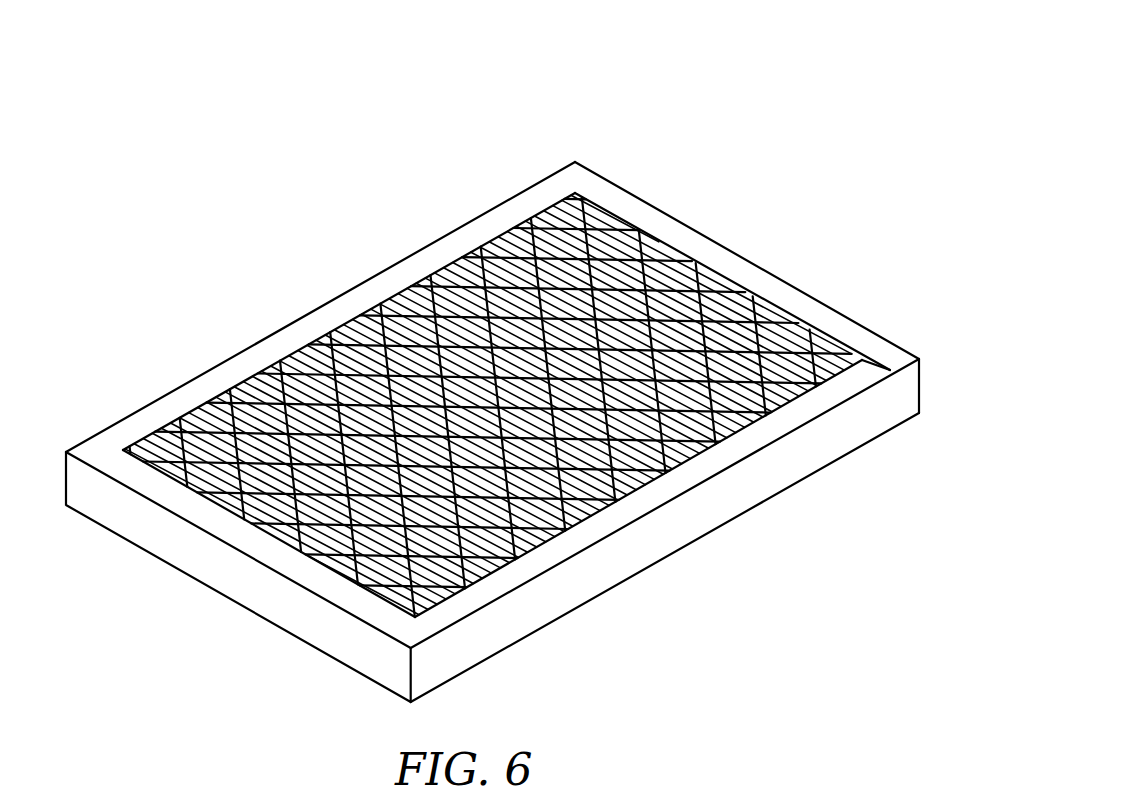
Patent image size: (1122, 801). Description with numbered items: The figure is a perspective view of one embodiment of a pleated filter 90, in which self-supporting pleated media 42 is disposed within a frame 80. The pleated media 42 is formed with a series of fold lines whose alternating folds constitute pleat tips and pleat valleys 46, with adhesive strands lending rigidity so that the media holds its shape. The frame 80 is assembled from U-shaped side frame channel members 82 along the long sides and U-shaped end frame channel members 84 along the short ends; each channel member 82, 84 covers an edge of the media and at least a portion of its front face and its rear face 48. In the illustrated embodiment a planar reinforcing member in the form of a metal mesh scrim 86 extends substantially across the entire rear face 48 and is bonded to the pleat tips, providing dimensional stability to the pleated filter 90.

The pleated filter 90 is at (492, 374).
The rear face 48 is at (489, 367).
The self-supporting pleated media 42 is at (603, 216).
The pleat valleys 46 is at (322, 357).
The frame 80 is at (492, 432).
The side frame channel members 82 is at (402, 268).
The end frame channel members 84 is at (745, 268).
The metal mesh scrim 86 is at (815, 345).